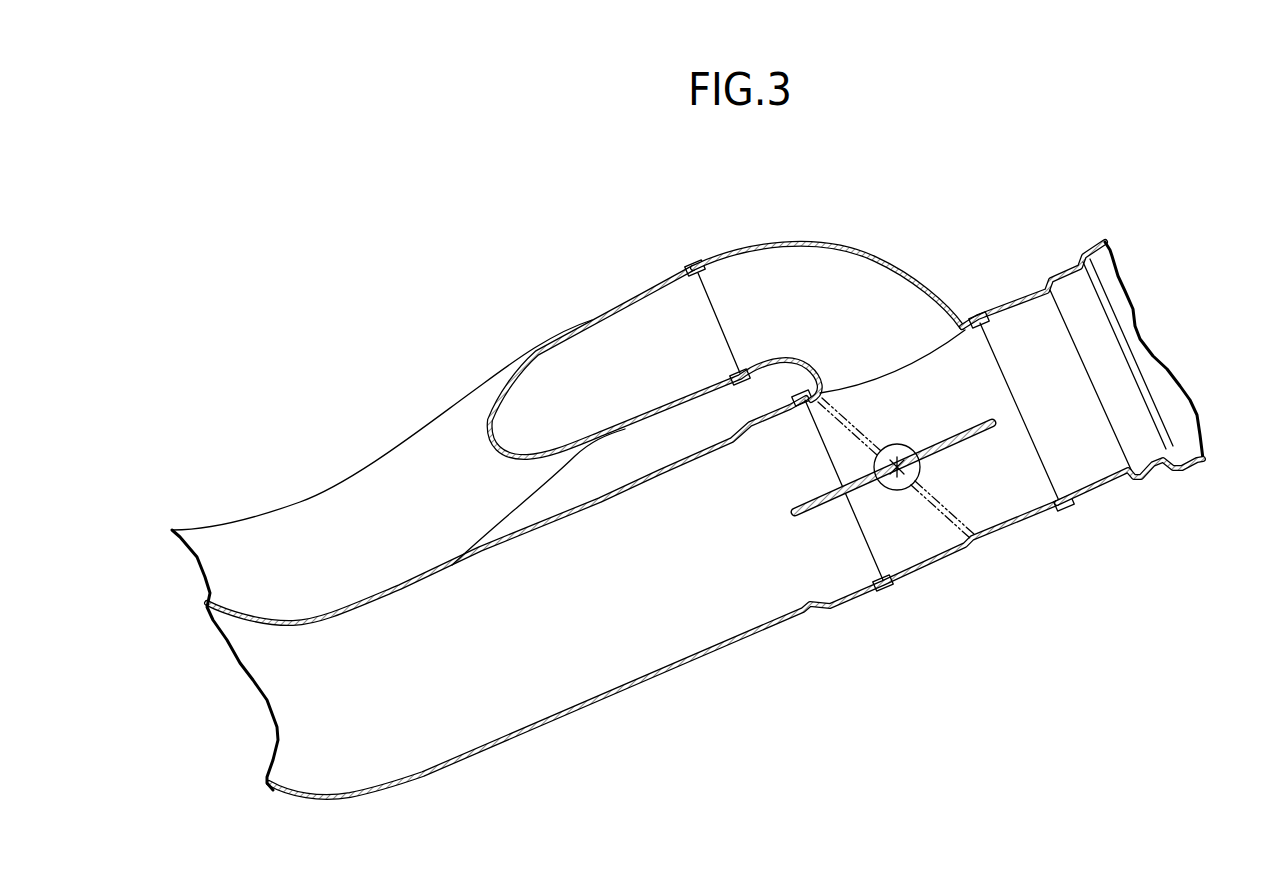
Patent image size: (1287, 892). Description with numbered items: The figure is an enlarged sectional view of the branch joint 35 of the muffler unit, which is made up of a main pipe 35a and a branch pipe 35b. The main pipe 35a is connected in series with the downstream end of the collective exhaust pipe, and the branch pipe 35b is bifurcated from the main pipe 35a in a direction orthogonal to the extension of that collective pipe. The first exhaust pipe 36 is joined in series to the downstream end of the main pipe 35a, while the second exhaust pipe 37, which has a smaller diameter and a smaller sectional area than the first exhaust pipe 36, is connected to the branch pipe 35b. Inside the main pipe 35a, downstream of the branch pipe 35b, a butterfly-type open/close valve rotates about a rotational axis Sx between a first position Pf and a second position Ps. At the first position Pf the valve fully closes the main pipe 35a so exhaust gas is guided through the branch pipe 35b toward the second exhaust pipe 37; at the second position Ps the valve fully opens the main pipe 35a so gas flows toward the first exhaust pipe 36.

The branch joint 35 is at (1098, 392).
The main pipe 35a is at (1100, 490).
The branch pipe 35b is at (910, 273).
The first exhaust pipe 36 is at (713, 652).
The second exhaust pipe 37 is at (640, 295).
The rotational axis Sx is at (898, 445).
The second position Ps is at (967, 425).
The first position Pf is at (943, 517).